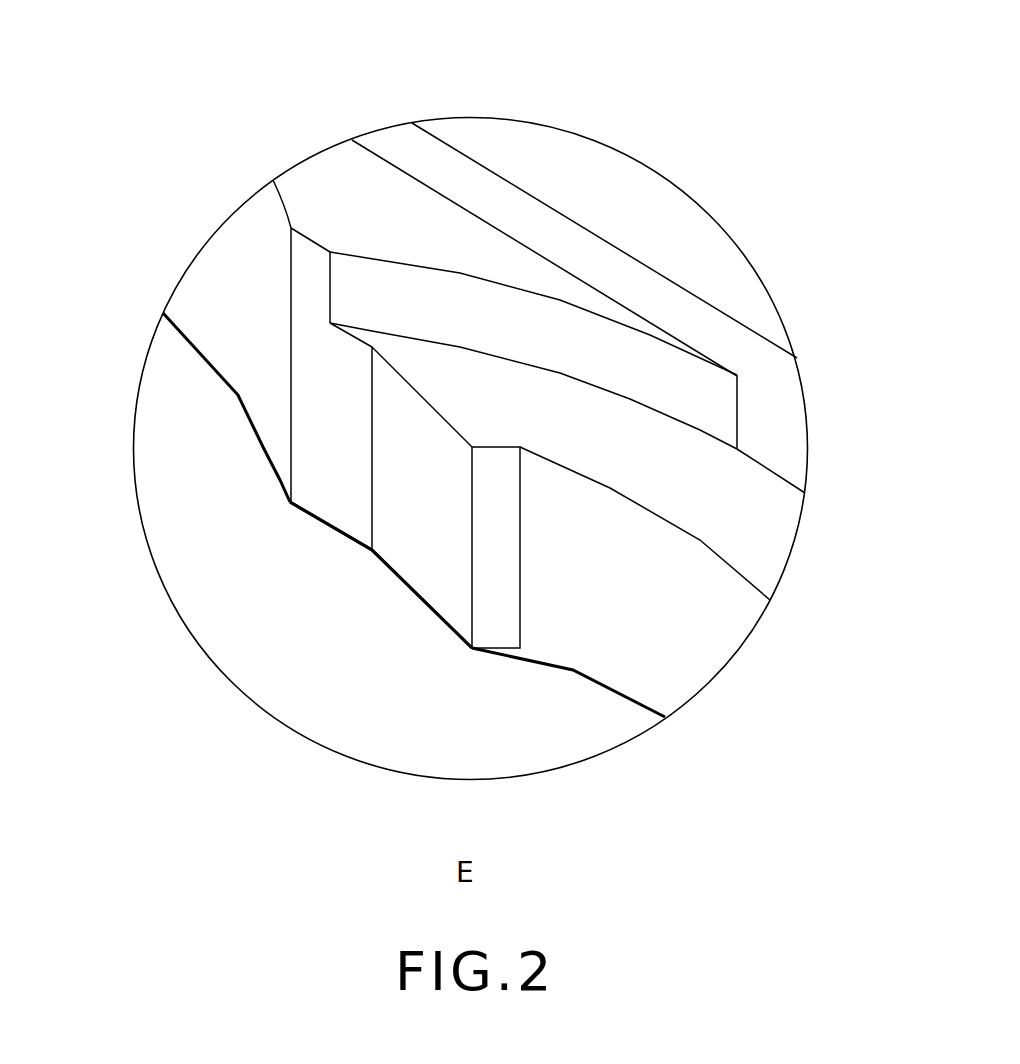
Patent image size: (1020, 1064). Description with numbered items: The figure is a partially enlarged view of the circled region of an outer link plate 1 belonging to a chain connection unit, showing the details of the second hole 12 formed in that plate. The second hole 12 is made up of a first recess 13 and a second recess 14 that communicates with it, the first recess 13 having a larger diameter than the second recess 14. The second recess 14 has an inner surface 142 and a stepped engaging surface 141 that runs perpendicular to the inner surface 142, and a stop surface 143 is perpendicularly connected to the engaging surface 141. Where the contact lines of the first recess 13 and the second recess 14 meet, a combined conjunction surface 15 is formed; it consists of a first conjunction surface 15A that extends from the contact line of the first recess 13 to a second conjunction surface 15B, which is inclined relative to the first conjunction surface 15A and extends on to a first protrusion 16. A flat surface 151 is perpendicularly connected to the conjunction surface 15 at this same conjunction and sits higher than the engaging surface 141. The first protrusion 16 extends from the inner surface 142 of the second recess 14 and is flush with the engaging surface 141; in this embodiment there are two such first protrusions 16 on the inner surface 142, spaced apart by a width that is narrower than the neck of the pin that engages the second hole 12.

The outer link plate 1 is at (617, 167).
The second hole 12 is at (280, 633).
The first recess 13 is at (238, 395).
The second recess 14 is at (615, 693).
The engaging surface 141 is at (733, 497).
The inner surface 142 is at (687, 642).
The stop surface 143 is at (465, 300).
The combined conjunction surface 15 is at (308, 500).
The flat surface 151 is at (338, 178).
The first conjunction surface 15A is at (348, 510).
The second conjunction surface 15B is at (430, 583).
The first protrusion 16 is at (485, 607).